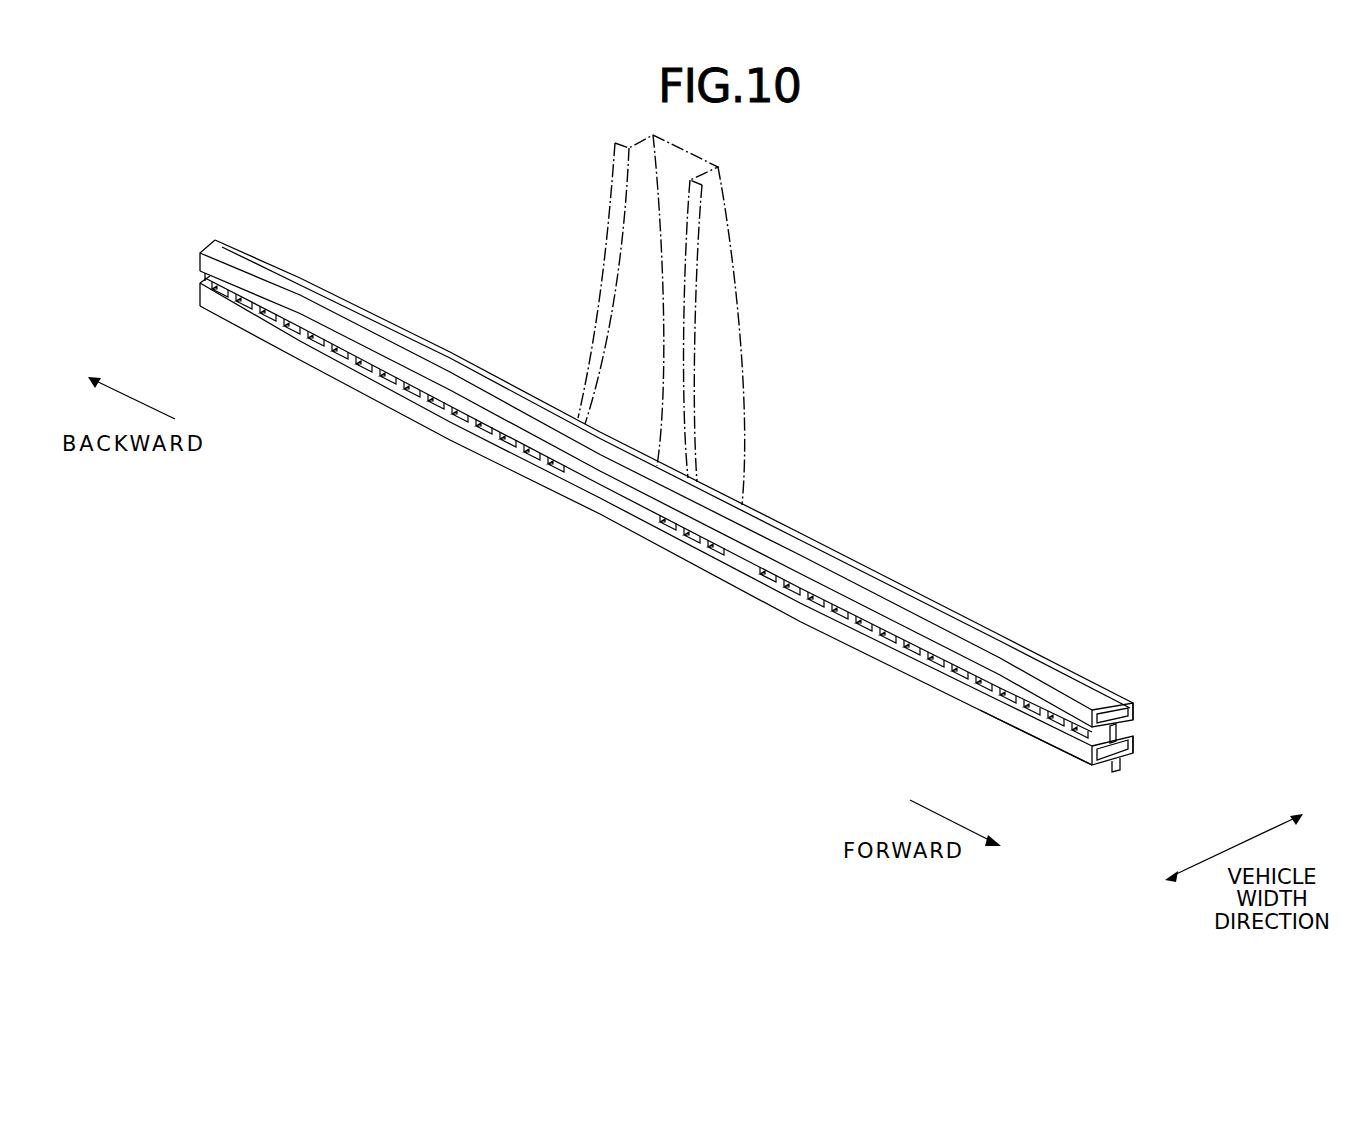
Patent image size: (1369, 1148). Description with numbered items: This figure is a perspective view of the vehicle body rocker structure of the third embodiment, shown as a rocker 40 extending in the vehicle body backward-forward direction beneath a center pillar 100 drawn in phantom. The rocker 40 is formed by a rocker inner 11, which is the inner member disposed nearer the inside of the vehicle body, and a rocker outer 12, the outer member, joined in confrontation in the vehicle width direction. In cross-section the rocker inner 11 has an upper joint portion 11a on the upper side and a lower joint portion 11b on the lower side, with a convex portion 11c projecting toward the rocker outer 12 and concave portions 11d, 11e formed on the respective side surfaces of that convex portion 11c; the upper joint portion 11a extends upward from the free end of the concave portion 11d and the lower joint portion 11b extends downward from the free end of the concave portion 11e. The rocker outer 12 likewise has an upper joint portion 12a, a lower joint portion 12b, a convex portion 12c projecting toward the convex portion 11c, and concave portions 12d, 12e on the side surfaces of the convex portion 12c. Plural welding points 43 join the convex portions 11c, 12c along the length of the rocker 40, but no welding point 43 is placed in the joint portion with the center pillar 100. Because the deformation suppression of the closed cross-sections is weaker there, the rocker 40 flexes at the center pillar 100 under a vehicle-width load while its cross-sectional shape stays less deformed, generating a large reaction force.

The center pillar 100 is at (604, 248).
The rocker 40 is at (970, 510).
The rocker inner 11 is at (666, 528).
The upper joint portion 11a is at (1078, 698).
The lower joint portion 11b is at (1100, 766).
The convex portion 11c is at (1088, 746).
The concave portion 11d is at (1063, 722).
The concave portion 11e is at (968, 703).
The rocker outer 12 is at (710, 519).
The upper joint portion 12a is at (1128, 703).
The lower joint portion 12b is at (1128, 772).
The convex portion 12c is at (1125, 737).
The concave portion 12d is at (1134, 720).
The concave portion 12e is at (1135, 755).
The welding point 43 is at (227, 292).